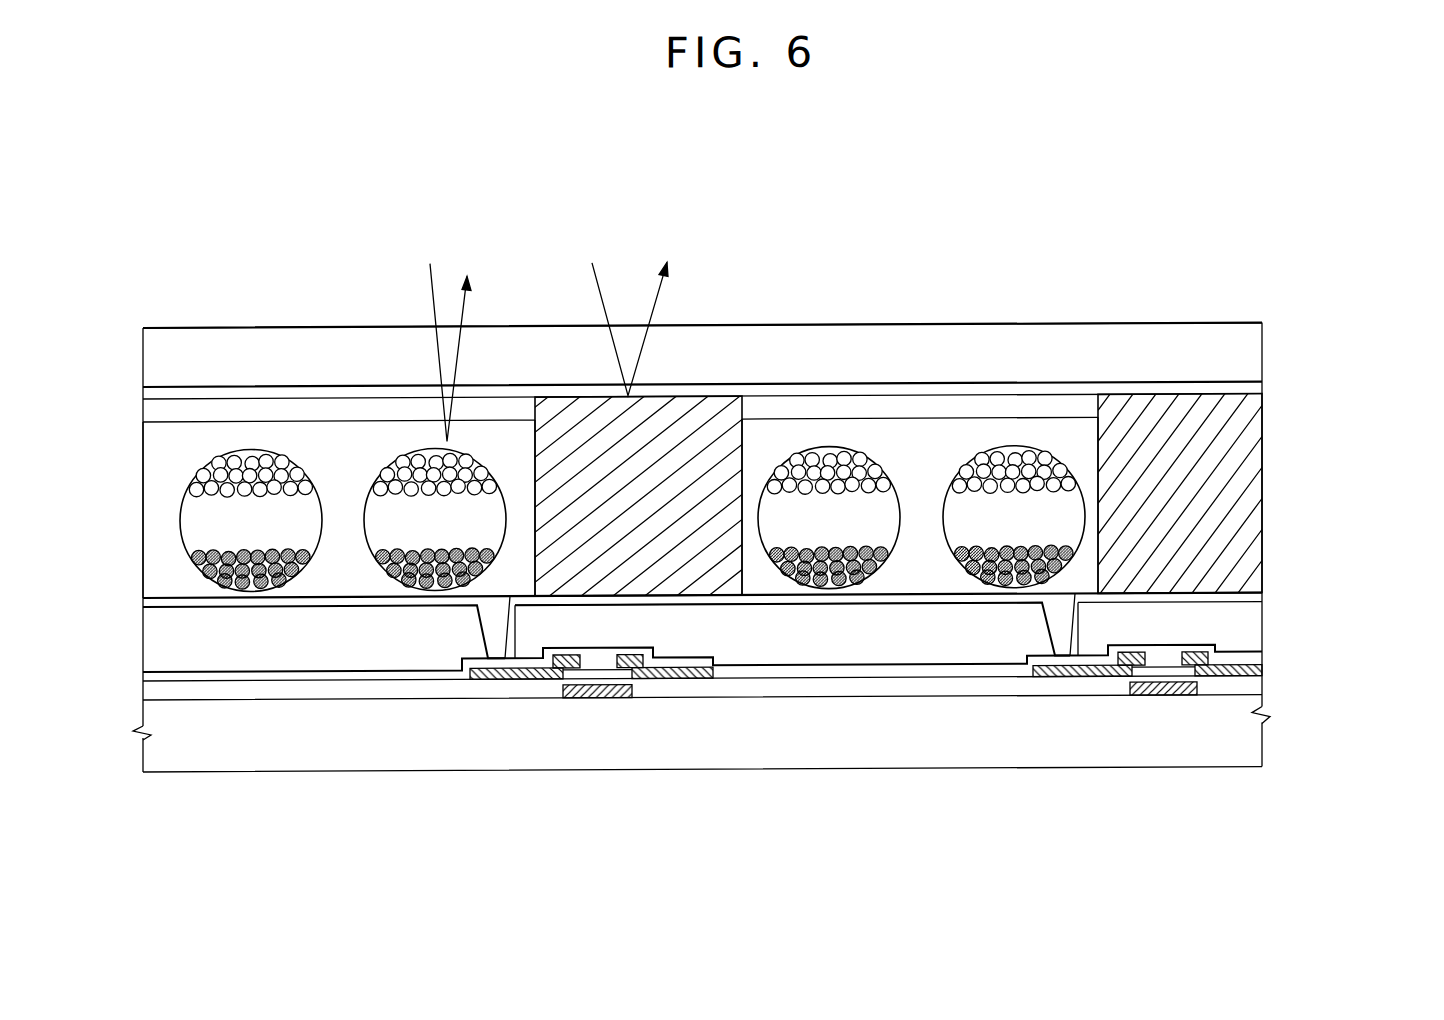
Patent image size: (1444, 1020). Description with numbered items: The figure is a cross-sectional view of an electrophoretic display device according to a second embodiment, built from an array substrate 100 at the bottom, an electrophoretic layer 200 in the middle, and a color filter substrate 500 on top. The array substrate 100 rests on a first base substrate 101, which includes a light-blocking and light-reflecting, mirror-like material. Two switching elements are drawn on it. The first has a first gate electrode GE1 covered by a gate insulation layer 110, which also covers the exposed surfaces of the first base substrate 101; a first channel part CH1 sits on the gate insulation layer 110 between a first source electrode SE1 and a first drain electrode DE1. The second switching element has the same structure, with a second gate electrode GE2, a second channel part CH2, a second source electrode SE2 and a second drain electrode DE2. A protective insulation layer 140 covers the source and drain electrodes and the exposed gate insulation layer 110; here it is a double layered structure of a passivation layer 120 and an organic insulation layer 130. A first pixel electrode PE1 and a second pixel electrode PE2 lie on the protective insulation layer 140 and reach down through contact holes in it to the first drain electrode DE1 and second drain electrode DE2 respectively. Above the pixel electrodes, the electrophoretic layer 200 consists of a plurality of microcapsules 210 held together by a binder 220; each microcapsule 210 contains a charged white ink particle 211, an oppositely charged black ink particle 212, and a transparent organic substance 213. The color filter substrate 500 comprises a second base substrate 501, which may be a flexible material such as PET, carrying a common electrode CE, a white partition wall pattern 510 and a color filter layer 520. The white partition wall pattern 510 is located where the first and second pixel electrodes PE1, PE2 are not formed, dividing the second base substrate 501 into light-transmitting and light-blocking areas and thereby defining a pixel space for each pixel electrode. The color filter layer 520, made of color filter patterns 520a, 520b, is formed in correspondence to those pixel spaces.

The color filter substrate 500 is at (130, 330).
The second base substrate 501 is at (1253, 347).
The common electrode CE is at (1253, 389).
The color filter layer 520 is at (805, 245).
The color filter pattern 520a is at (509, 410).
The color filter pattern 520b is at (780, 408).
The white partition wall pattern 510 is at (1250, 520).
The electrophoretic layer 200 is at (130, 428).
The binder 220 is at (358, 441).
The microcapsule 210 is at (1082, 590).
The white ink particle 211 is at (968, 465).
The black ink particle 212 is at (992, 588).
The transparent organic substance 213 is at (955, 517).
The array substrate 100 is at (130, 603).
The first base substrate 101 is at (1255, 712).
The gate insulation layer 110 is at (1255, 683).
The passivation layer 120 is at (1262, 655).
The organic insulation layer 130 is at (1255, 625).
The protective insulation layer 140 is at (1352, 610).
The first pixel electrode PE1 is at (333, 608).
The second pixel electrode PE2 is at (881, 608).
The first drain electrode DE1 is at (510, 682).
The second drain electrode DE2 is at (1070, 682).
The first source electrode SE1 is at (680, 682).
The second source electrode SE2 is at (1227, 682).
The first gate electrode GE1 is at (580, 700).
The second gate electrode GE2 is at (1141, 700).
The first channel part CH1 is at (605, 678).
The second channel part CH2 is at (1163, 678).